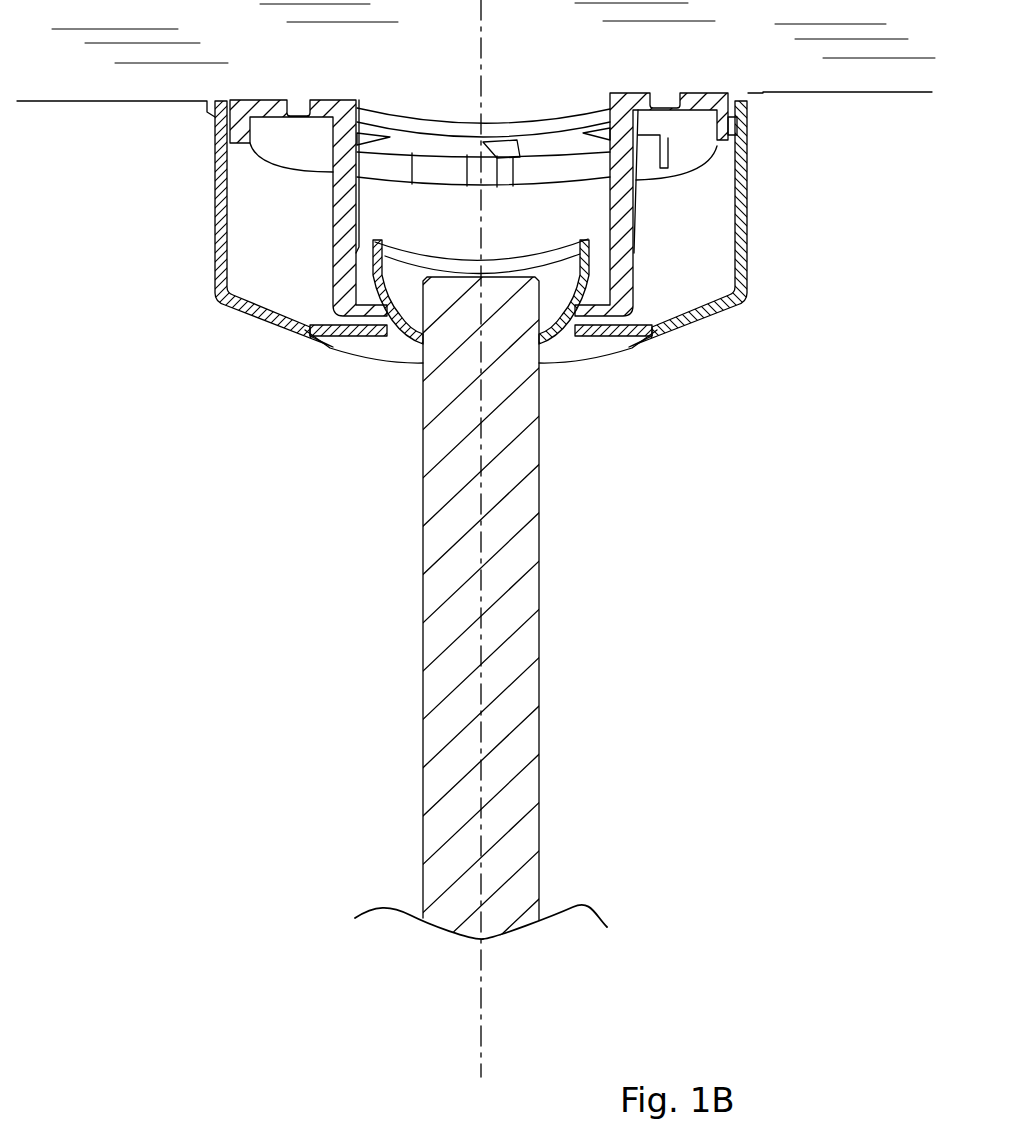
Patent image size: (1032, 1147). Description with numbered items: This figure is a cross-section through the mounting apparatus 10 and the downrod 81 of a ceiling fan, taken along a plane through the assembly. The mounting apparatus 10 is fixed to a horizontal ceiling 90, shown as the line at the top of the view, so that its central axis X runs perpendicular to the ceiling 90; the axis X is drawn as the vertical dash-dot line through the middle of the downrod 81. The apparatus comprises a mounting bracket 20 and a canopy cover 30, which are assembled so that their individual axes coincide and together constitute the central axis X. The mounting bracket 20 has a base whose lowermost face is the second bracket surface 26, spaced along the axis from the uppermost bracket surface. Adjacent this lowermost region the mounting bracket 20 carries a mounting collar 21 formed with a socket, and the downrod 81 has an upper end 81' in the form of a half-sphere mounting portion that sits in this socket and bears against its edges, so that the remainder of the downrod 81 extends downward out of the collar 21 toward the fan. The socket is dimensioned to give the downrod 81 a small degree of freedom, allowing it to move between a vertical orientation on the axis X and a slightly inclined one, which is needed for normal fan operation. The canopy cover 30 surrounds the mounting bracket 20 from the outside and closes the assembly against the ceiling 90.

The mounting apparatus 10 is at (142, 286).
The mounting bracket 20 is at (680, 147).
The mounting collar 21 is at (350, 323).
The second bracket surface 26 is at (593, 315).
The canopy cover 30 is at (250, 315).
The downrod 81 is at (474, 592).
The upper end of the downrod 81' is at (354, 249).
The ceiling 90 is at (813, 77).
The central axis X is at (482, 540).